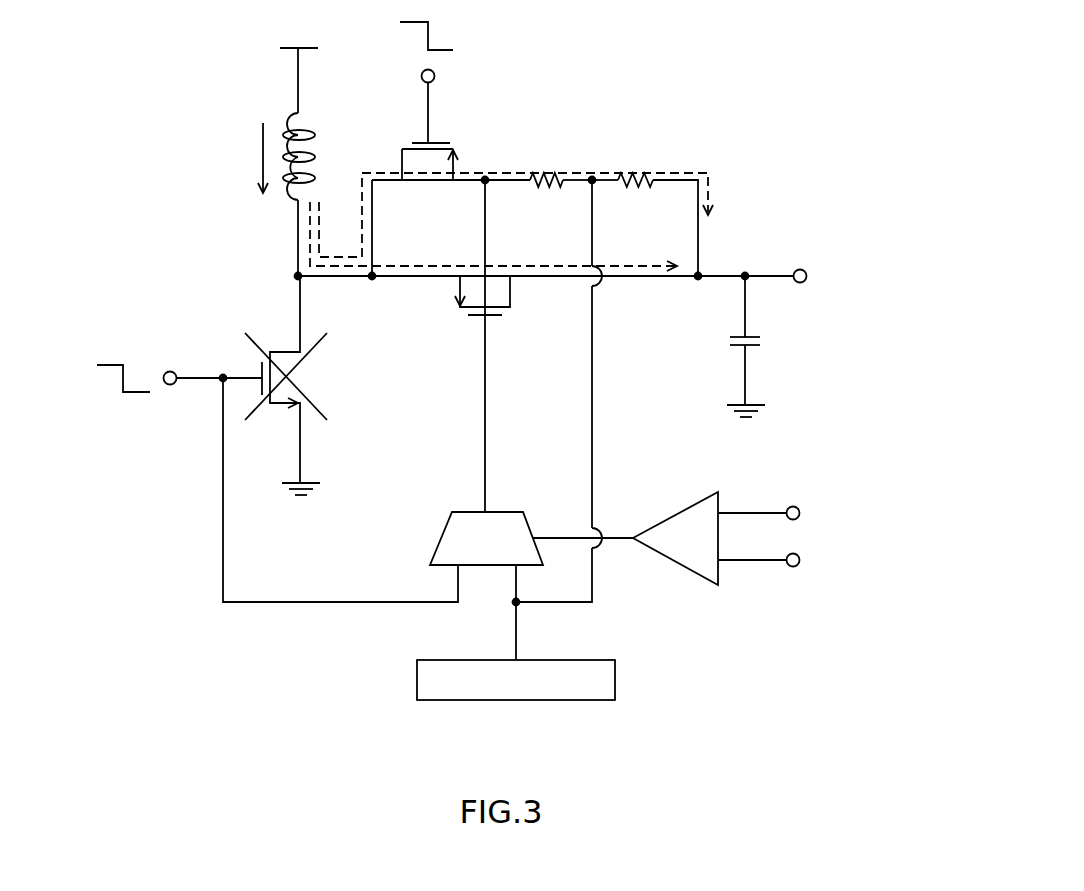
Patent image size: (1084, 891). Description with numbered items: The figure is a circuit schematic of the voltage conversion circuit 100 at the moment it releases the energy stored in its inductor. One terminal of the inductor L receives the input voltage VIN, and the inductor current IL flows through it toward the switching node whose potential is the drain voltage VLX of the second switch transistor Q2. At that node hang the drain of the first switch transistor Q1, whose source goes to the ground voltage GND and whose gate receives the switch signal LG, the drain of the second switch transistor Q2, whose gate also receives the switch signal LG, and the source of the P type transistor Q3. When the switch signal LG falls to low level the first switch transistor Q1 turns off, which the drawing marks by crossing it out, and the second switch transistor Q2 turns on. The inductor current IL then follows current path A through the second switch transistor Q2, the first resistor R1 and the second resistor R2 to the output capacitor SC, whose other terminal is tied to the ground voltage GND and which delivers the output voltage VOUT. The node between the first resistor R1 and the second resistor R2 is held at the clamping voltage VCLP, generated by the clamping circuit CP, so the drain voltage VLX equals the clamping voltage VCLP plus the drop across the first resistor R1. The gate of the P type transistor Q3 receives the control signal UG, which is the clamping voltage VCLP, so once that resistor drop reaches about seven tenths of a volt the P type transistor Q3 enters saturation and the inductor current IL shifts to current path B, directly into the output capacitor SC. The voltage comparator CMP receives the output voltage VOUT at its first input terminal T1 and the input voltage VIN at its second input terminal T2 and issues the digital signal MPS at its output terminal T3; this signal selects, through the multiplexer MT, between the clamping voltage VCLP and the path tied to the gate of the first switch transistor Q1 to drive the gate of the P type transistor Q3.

The voltage conversion circuit 100 is at (794, 71).
The inductor L is at (312, 156).
The inductor current IL is at (248, 158).
The input voltage VIN is at (567, 298).
The switch signal LG is at (288, 207).
The first switch transistor Q1 is at (291, 379).
The second switch transistor Q2 is at (430, 179).
The P type transistor Q3 is at (463, 248).
The control signal UG is at (511, 339).
The first resistor R1 is at (540, 161).
The second resistor R2 is at (645, 206).
The current path A is at (528, 215).
The current path B is at (493, 236).
The drain voltage VLX is at (513, 276).
The ground voltage GND is at (526, 465).
The multiplexer MT is at (468, 512).
The digital signal MPS is at (583, 523).
The voltage comparator CMP is at (675, 567).
The first input terminal T1 is at (705, 516).
The second input terminal T2 is at (705, 563).
The output terminal T3 is at (662, 541).
The output voltage VOUT is at (804, 395).
The output capacitor SC is at (766, 340).
The clamping voltage VCLP is at (551, 612).
The clamping circuit CP is at (417, 680).